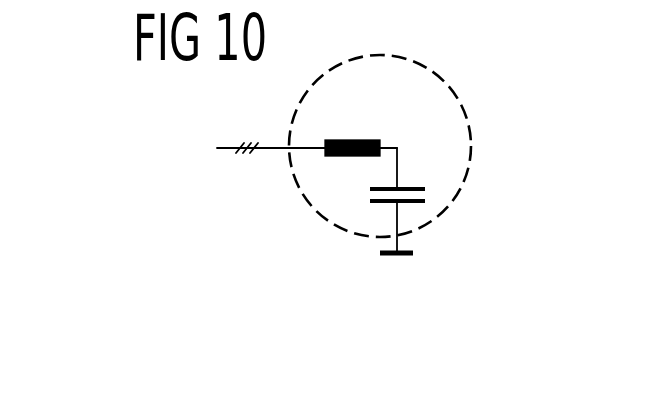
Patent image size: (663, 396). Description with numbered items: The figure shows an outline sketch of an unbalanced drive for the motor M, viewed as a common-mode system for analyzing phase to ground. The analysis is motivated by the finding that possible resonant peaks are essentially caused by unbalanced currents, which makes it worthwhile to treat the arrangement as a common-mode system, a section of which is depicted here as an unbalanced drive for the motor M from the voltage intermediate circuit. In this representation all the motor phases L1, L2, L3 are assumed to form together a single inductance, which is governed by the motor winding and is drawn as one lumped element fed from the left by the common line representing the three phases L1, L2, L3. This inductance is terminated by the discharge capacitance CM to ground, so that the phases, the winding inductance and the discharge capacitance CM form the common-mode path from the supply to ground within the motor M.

The motor M is at (320, 215).
The supply phase lines L1, L2, L3 is at (203, 148).
The discharge capacitance CM is at (418, 186).